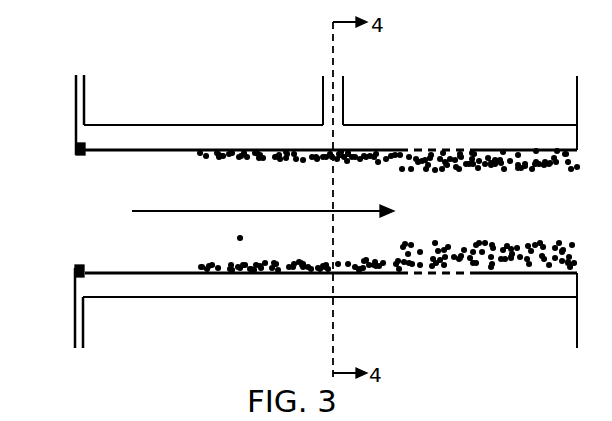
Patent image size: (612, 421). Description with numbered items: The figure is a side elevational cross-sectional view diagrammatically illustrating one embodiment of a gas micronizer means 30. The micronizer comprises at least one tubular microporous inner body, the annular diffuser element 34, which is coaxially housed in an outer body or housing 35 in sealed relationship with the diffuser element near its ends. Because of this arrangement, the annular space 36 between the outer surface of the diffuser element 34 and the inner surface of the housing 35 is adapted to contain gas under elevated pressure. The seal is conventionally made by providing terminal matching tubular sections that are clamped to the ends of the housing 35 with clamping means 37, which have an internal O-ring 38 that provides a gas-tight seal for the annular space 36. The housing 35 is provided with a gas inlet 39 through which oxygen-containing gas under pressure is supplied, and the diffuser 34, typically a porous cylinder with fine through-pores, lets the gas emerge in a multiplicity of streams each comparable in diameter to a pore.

The gas micronizer means 30 is at (234, 300).
The annular diffuser element 34 is at (412, 150).
The housing 35 is at (473, 125).
The annular space 36 is at (537, 140).
The clamping means 37 is at (76, 97).
The O-ring 38 is at (76, 155).
The gas inlet 39 is at (322, 90).